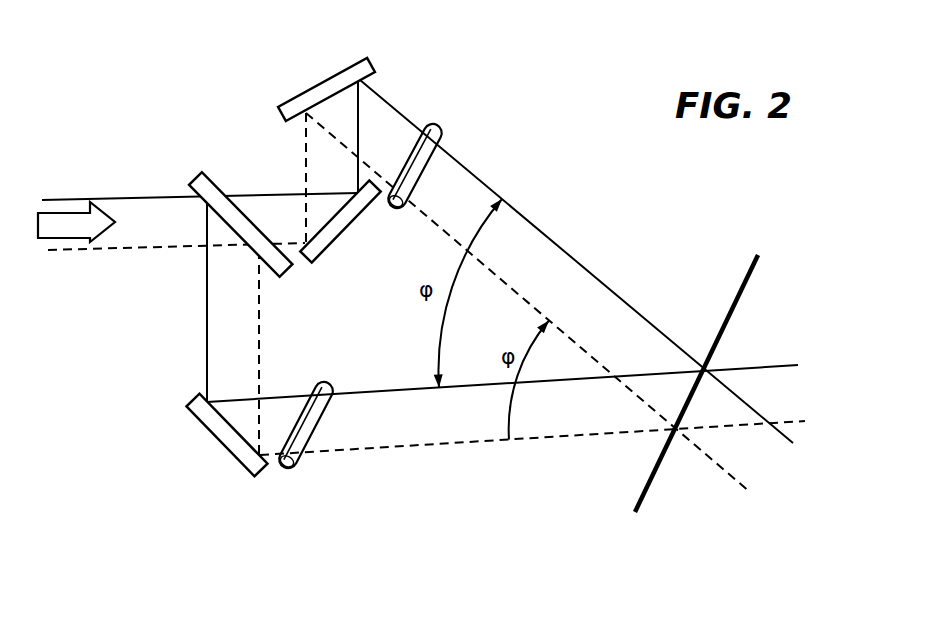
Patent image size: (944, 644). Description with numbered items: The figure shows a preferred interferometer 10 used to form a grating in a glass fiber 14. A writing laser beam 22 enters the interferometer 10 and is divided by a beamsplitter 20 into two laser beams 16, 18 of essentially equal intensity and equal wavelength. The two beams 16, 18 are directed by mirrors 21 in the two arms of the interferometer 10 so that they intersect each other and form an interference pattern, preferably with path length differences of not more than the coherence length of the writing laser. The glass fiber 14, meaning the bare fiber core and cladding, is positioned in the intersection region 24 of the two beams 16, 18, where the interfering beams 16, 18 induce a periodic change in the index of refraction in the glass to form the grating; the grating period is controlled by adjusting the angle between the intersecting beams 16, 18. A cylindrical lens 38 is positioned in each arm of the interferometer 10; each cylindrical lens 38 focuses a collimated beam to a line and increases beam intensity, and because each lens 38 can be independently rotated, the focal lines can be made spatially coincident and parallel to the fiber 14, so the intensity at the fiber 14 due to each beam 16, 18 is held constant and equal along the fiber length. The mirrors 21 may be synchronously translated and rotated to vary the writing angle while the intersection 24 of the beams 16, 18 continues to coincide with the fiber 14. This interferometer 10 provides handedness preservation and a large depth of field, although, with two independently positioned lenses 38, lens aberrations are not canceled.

The interferometer 10 is at (657, 540).
The glass fiber 14 is at (721, 333).
The laser beam 16 is at (565, 252).
The laser beam 18 is at (478, 385).
The beamsplitter 20 is at (215, 185).
The mirrors 21 is at (367, 58).
The writing laser beam 22 is at (85, 200).
The intersection region 24 is at (710, 367).
The cylindrical lens 38 is at (333, 383).